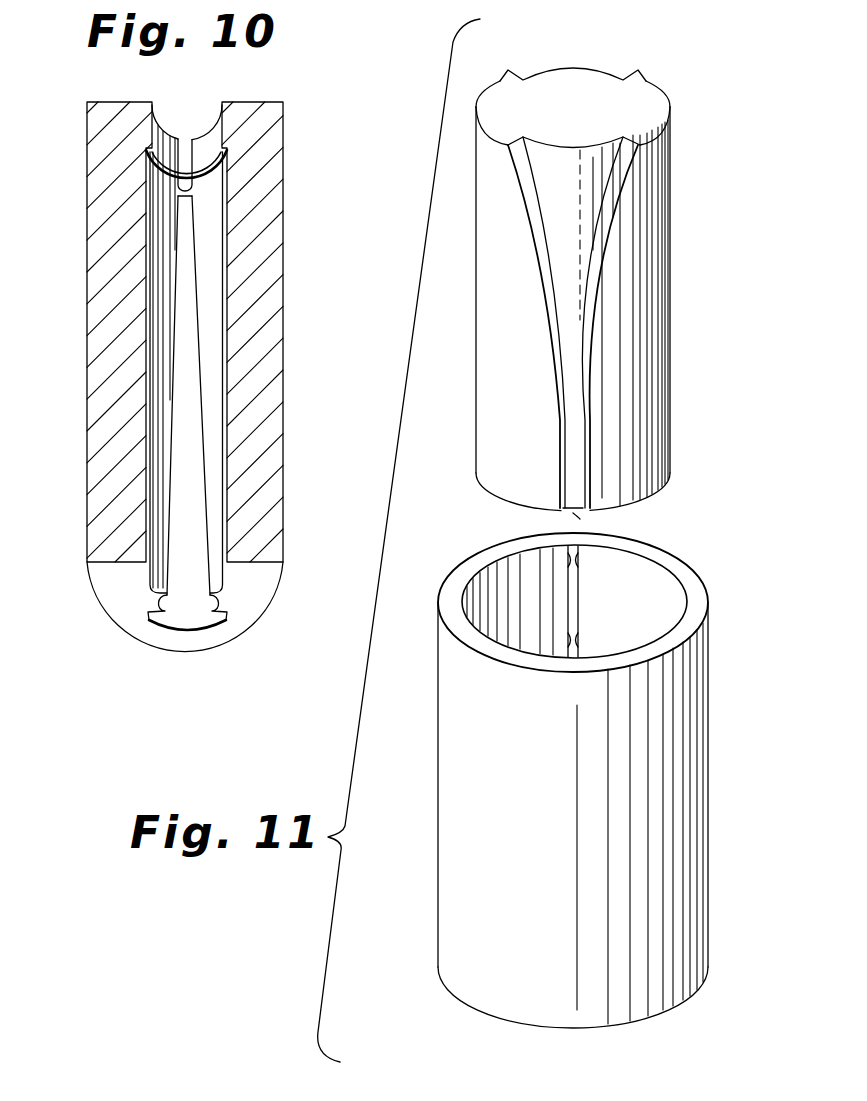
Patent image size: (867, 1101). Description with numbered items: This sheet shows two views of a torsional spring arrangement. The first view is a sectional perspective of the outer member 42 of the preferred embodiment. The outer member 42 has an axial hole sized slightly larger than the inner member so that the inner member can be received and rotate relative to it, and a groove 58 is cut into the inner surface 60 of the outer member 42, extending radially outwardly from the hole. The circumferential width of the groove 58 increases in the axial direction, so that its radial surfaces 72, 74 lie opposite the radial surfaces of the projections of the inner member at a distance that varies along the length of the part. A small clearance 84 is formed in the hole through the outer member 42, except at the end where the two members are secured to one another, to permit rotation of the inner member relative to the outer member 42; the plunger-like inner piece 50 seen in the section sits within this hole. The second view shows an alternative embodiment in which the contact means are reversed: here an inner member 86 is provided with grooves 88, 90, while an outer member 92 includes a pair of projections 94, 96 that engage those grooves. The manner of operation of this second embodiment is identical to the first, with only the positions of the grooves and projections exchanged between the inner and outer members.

In FIG. 10, the outer member 42 is at (270, 297).
In FIG. 10, the plunger 50 is at (205, 140).
In FIG. 10, the groove 58 is at (186, 616).
In FIG. 10, the inner surface 60 is at (210, 228).
In FIG. 10, the radial surface 72 is at (155, 605).
In FIG. 10, the radial surface 74 is at (217, 607).
In FIG. 10, the clearance 84 is at (225, 160).
In FIG. 11, the inner member 86 is at (640, 207).
In FIG. 11, the groove 88 is at (576, 515).
In FIG. 11, the groove 90 is at (618, 70).
In FIG. 11, the outer member 92 is at (690, 790).
In FIG. 11, the projection 94 is at (575, 643).
In FIG. 11, the projection 96 is at (578, 560).